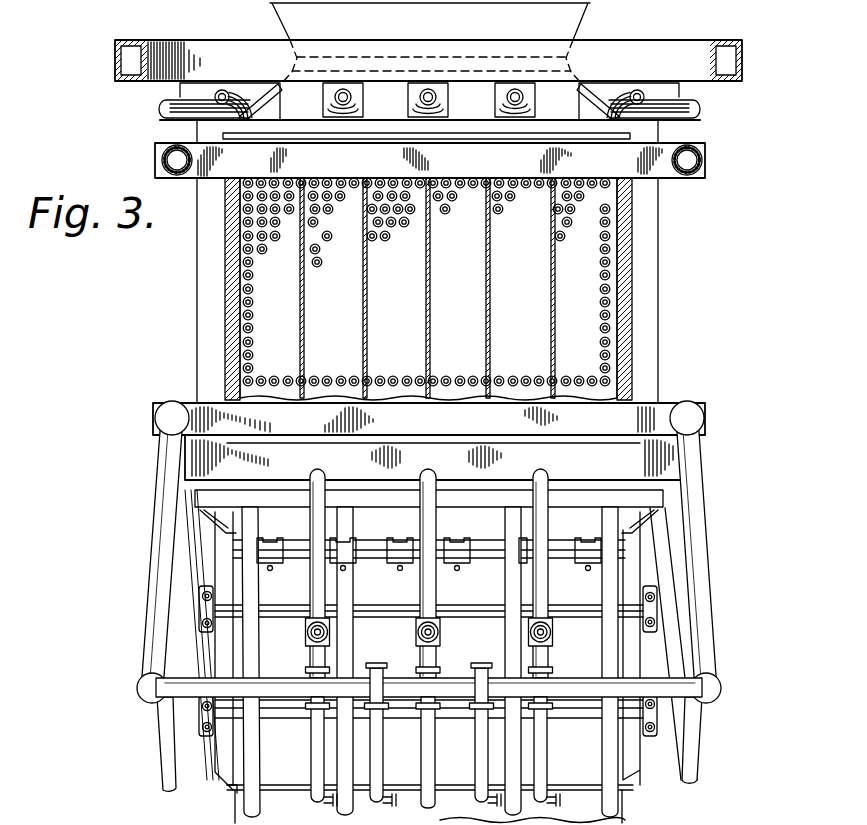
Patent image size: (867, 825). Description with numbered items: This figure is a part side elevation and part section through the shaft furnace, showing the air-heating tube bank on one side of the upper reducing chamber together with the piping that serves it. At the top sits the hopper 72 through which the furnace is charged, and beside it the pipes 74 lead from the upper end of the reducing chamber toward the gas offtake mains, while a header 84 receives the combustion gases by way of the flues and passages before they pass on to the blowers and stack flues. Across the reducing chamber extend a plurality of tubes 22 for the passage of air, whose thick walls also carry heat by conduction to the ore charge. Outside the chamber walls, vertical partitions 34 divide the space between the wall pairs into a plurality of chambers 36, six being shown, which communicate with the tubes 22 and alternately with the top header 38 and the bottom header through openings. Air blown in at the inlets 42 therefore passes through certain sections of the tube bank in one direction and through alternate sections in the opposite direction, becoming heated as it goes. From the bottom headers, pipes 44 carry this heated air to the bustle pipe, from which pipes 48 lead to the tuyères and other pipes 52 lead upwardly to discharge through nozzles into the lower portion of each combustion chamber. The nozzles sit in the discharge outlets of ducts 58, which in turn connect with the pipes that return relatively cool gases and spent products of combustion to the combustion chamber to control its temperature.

The hopper 72 is at (540, 27).
The header 84 is at (428, 60).
The pipe 74 is at (238, 88).
The inlet 42 is at (160, 162).
The header 38 is at (430, 160).
The tube 22 is at (227, 267).
The vertical partition 34 is at (302, 308).
The chamber 36 is at (585, 275).
The duct 58 is at (429, 441).
The pipe 44 is at (697, 580).
The pipe 52 is at (322, 592).
The pipe 48 is at (315, 765).